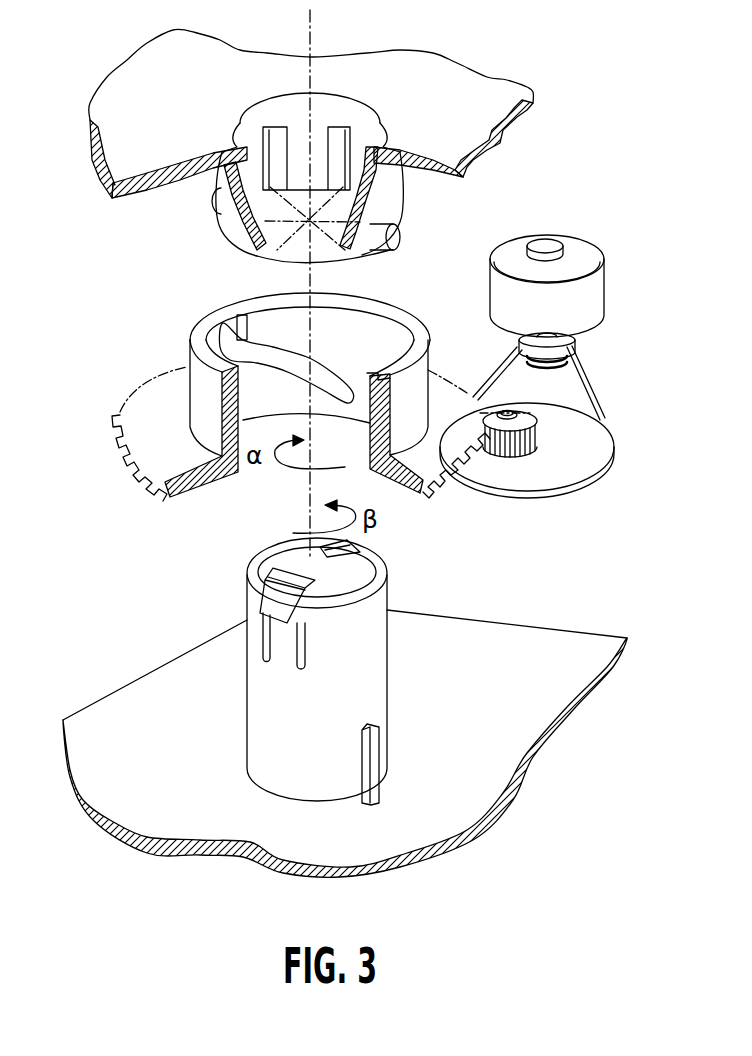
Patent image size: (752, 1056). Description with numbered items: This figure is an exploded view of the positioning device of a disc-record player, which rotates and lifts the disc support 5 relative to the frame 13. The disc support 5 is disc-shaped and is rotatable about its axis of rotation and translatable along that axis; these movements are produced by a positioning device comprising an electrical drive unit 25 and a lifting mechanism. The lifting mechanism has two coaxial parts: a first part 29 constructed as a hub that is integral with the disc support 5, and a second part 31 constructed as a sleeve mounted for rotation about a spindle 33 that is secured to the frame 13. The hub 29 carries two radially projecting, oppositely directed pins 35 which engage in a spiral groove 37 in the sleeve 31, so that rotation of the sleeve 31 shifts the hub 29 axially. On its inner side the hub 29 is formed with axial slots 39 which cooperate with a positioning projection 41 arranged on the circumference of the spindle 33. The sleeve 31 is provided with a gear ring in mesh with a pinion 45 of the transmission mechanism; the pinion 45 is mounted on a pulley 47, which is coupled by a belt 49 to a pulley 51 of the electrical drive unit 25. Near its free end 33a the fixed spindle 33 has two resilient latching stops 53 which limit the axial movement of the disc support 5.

The disc support 5 is at (497, 87).
The frame 13 is at (537, 645).
The electrical drive unit 25 is at (593, 292).
The first part (hub) 29 is at (390, 190).
The second part (sleeve) 31 is at (200, 377).
The spindle 33 is at (375, 662).
The free end of spindle 33a is at (253, 573).
The pins 35 is at (400, 240).
The spiral groove 37 is at (228, 330).
The axial slots 39 is at (257, 117).
The positioning projection 41 is at (373, 750).
The pinion 45 is at (537, 433).
The pulley 47 is at (553, 487).
The belt 49 is at (583, 380).
The pulley 51 is at (577, 338).
The resilient latching stops 53 is at (277, 603).